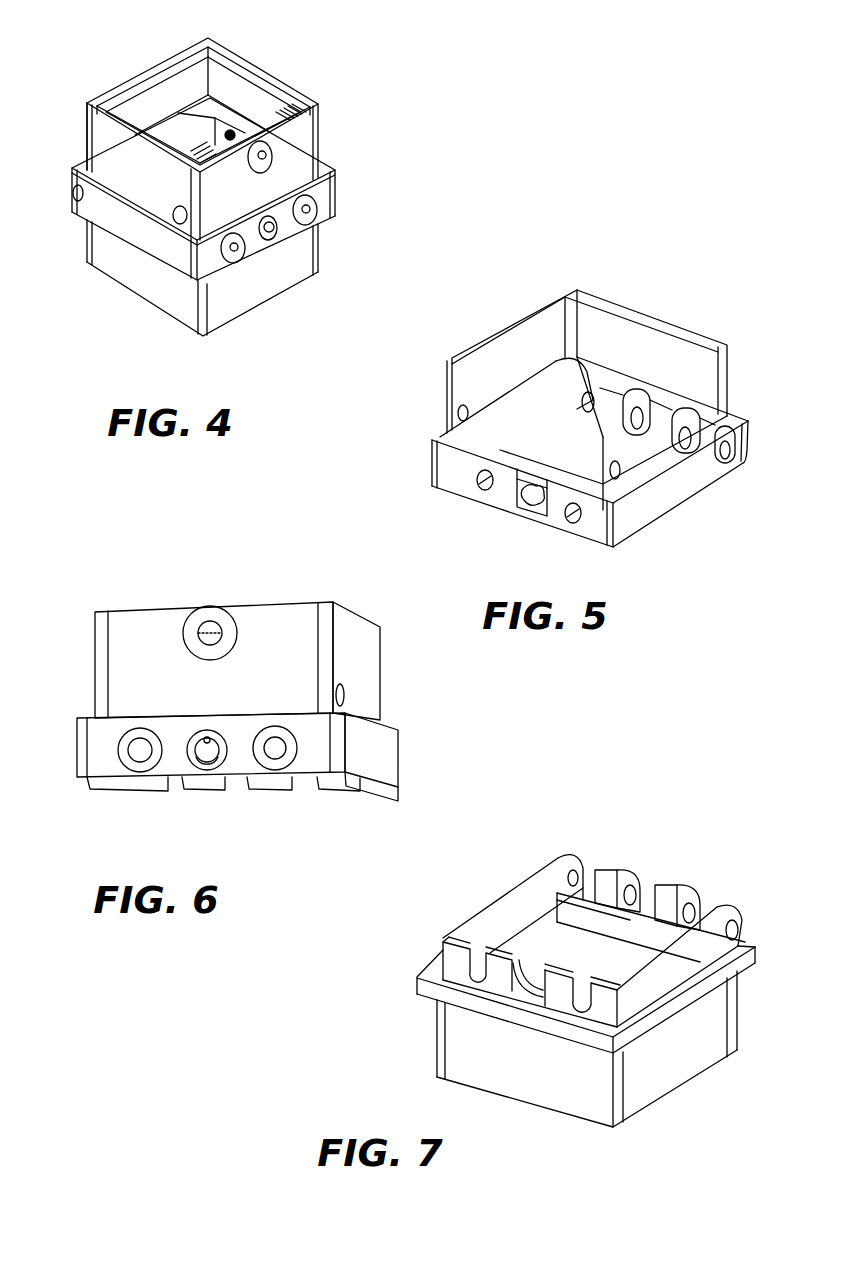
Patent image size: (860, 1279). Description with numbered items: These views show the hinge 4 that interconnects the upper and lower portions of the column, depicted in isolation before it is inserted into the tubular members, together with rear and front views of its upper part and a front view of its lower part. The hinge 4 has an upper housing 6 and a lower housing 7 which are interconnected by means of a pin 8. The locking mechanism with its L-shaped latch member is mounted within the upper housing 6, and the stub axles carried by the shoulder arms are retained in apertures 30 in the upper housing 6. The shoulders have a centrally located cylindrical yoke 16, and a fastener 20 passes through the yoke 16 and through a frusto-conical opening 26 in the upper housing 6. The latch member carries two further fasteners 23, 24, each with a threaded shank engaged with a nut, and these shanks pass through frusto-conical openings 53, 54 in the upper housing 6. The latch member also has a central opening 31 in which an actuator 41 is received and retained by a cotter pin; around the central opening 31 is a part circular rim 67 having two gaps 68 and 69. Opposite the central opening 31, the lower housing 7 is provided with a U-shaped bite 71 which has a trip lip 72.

In FIG. 4, the hinge 4 is at (340, 129).
In FIG. 4, the upper housing 6 is at (115, 148).
In FIG. 5, the upper housing 6 is at (637, 347).
In FIG. 6, the upper housing 6 is at (138, 632).
In FIG. 4, the lower housing 7 is at (157, 285).
In FIG. 7, the lower housing 7 is at (673, 1055).
In FIG. 4, the pin 8 is at (75, 192).
In FIG. 4, the cylindrical yoke 16 is at (258, 128).
In FIG. 4, the fastener 20 is at (268, 152).
In FIG. 4, the fastener 23 is at (234, 257).
In FIG. 4, the fastener 24 is at (312, 210).
In FIG. 6, the frusto-conical opening 26 is at (193, 617).
In FIG. 4, the apertures 30 is at (177, 215).
In FIG. 6, the central opening 31 is at (213, 750).
In FIG. 4, the actuator 41 is at (277, 230).
In FIG. 5, the frusto-conical opening 53 is at (480, 486).
In FIG. 6, the frusto-conical opening 53 is at (127, 758).
In FIG. 5, the frusto-conical opening 54 is at (577, 518).
In FIG. 6, the frusto-conical opening 54 is at (287, 750).
In FIG. 6, the part circular rim 67 is at (197, 757).
In FIG. 5, the gap 68 is at (535, 488).
In FIG. 6, the gap 68 is at (210, 740).
In FIG. 5, the gap 69 is at (527, 485).
In FIG. 6, the gap 69 is at (212, 737).
In FIG. 7, the U-shaped bite 71 is at (535, 970).
In FIG. 7, the trip lip 72 is at (522, 958).